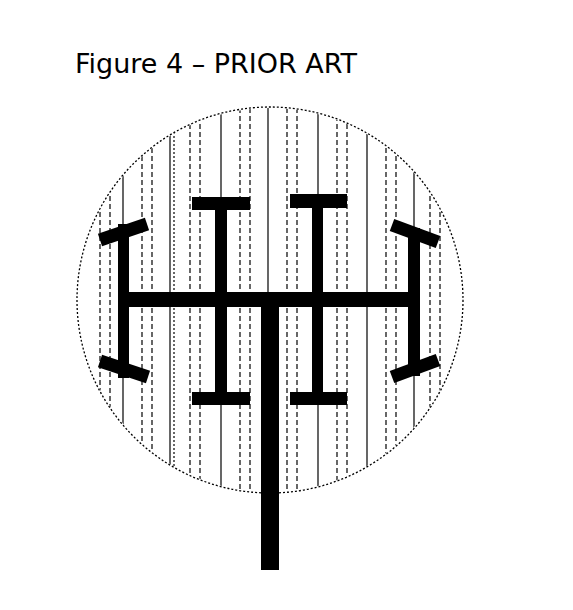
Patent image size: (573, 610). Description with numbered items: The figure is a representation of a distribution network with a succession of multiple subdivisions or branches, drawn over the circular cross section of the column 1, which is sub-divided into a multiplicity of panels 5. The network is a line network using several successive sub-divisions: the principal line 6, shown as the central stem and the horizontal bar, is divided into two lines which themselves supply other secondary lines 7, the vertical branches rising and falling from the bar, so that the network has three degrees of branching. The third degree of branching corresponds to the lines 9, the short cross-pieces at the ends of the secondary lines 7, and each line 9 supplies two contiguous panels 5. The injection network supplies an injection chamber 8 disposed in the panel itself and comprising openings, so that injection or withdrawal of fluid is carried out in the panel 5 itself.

The column 1 is at (428, 418).
The panel 5 is at (407, 423).
The principal line 6 is at (280, 523).
The secondary line 7 is at (115, 328).
The injection chamber 8 is at (440, 207).
The third-degree line 9 is at (336, 132).